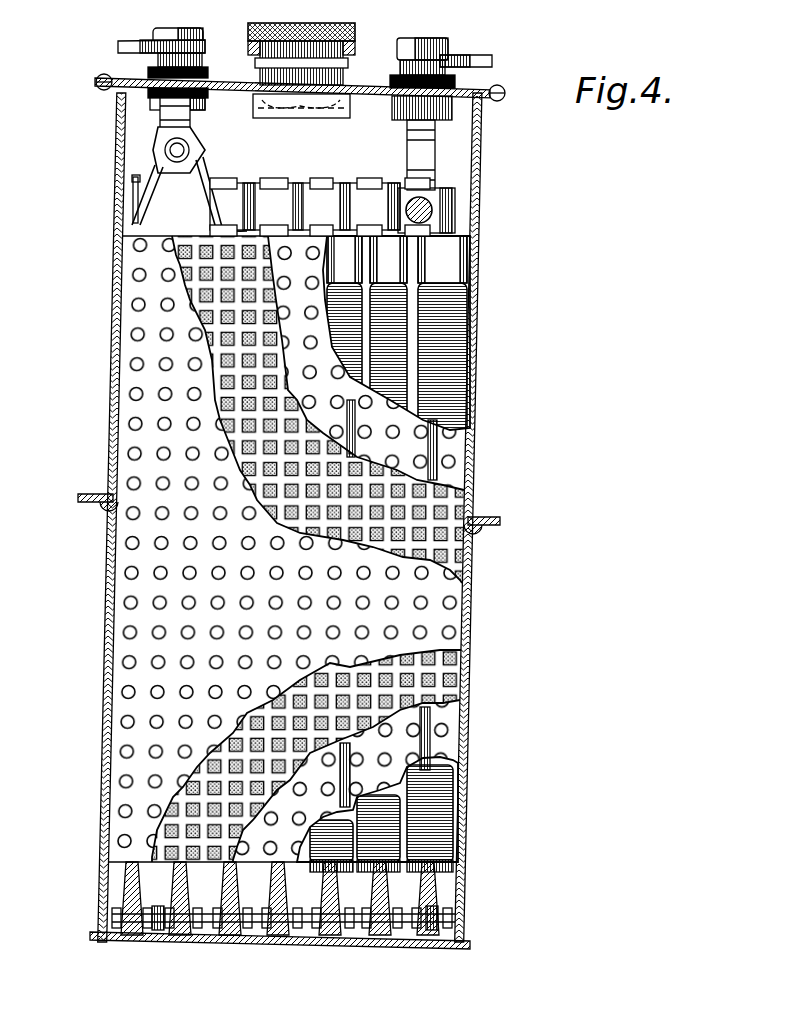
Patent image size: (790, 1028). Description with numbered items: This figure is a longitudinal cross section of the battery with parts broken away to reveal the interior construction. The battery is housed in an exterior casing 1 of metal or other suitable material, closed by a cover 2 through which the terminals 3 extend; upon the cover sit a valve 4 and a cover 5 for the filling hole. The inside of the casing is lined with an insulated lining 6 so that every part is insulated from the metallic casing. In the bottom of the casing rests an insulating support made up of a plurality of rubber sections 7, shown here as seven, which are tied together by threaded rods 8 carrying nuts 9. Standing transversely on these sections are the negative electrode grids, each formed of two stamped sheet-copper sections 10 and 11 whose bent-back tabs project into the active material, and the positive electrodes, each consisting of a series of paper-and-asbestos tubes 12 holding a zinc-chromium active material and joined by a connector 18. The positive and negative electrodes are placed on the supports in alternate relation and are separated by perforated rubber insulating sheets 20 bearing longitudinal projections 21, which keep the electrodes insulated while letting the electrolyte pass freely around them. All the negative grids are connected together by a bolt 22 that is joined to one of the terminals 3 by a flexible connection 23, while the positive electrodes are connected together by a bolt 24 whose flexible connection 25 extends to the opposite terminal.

The exterior casing 1 is at (460, 807).
The cover 2 is at (480, 90).
The terminals 3 is at (185, 30).
The valve 4 is at (322, 25).
The cover for the filling hole 5 is at (353, 50).
The insulated lining 6 is at (465, 837).
The sections 7 is at (432, 930).
The threaded rods 8 is at (158, 928).
The nuts 9 is at (350, 937).
The grid section 10 is at (452, 518).
The grid section 11 is at (420, 865).
The tubes 12 is at (413, 383).
The connector 18 is at (276, 205).
The insulating sheets 20 is at (452, 448).
The longitudinal projections 21 is at (437, 743).
The bolt 22 is at (170, 153).
The flexible connection 23 is at (168, 112).
The bolt 24 is at (420, 213).
The flexible connection 25 is at (408, 140).